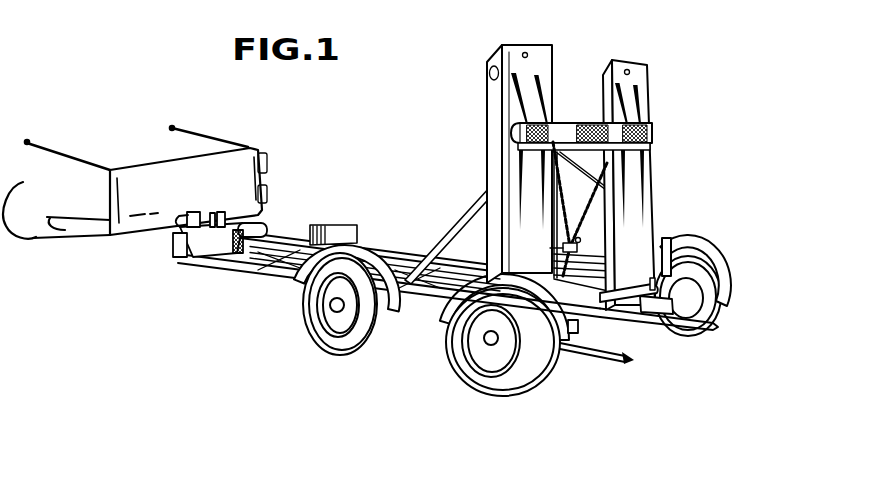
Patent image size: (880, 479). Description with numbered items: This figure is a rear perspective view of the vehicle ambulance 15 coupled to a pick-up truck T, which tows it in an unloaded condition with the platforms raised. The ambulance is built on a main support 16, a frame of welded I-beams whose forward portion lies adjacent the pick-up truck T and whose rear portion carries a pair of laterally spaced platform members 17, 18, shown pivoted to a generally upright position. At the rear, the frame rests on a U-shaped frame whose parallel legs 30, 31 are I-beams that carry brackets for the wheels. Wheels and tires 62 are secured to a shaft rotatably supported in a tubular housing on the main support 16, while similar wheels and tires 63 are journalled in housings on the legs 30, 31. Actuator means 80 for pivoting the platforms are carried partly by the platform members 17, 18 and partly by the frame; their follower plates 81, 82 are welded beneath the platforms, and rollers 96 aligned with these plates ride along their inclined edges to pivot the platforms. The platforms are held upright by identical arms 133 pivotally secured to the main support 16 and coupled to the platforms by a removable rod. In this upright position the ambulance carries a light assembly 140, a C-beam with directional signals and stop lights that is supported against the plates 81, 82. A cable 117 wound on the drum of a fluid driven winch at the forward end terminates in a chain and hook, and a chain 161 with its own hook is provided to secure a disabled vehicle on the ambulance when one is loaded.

The pick-up truck T is at (234, 126).
The vehicle ambulance 15 is at (591, 158).
The main support 16 is at (256, 282).
The platform member 17 is at (557, 54).
The platform member 18 is at (659, 65).
The leg 30 is at (715, 335).
The leg 31 is at (612, 368).
The wheels and tires 62 is at (353, 350).
The wheels and tires 63 is at (722, 302).
The actuator means 80 is at (580, 331).
The plate 81 is at (542, 165).
The plate 82 is at (518, 180).
The roller 96 is at (663, 305).
The cable 117 is at (405, 248).
The arm 133 is at (581, 152).
The light assembly 140 is at (653, 136).
The chain 161 is at (578, 232).